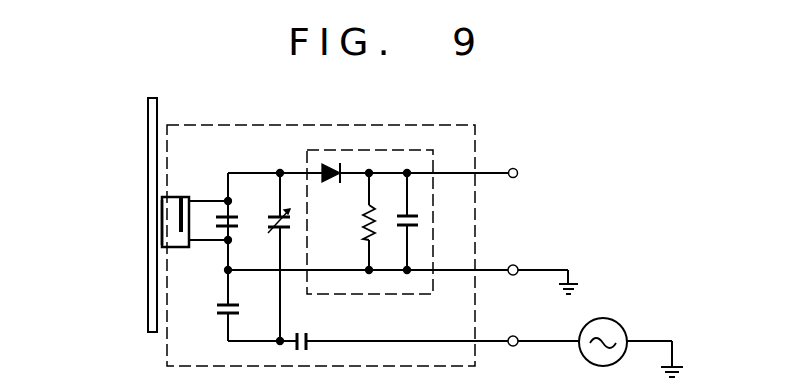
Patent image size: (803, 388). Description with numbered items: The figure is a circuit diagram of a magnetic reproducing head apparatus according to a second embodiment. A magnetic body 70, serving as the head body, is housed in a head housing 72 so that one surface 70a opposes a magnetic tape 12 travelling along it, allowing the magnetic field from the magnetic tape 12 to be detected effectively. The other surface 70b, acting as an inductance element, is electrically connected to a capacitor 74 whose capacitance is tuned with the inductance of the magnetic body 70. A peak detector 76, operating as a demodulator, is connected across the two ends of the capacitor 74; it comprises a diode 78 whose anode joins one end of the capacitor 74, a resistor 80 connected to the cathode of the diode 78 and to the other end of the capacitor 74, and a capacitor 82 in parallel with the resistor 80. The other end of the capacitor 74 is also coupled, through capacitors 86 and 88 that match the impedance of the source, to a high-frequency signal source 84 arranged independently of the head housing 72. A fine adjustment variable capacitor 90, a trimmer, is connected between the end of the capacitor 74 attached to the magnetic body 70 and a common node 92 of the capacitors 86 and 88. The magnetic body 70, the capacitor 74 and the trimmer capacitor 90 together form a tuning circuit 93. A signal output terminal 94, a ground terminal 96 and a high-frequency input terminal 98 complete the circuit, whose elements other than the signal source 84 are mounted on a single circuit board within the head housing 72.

The magnetic tape 12 is at (153, 98).
The magnetic body 70 is at (183, 198).
The one surface of the magnetic body 70a is at (162, 235).
The other surface of the magnetic body 70b is at (195, 241).
The head housing 72 is at (476, 128).
The capacitor 74 is at (230, 218).
The peak detector 76 is at (433, 183).
The diode 78 is at (329, 165).
The resistor 80 is at (366, 223).
The capacitor 82 is at (397, 222).
The high-frequency signal source 84 is at (606, 321).
The capacitor 86 is at (245, 300).
The capacitor 88 is at (301, 334).
The fine adjustment variable capacitor 90 is at (267, 222).
The common node 92 is at (281, 339).
The tuning circuit 93 is at (218, 165).
The signal output terminal 94 is at (518, 173).
The ground terminal 96 is at (514, 266).
The high-frequency input terminal 98 is at (514, 336).